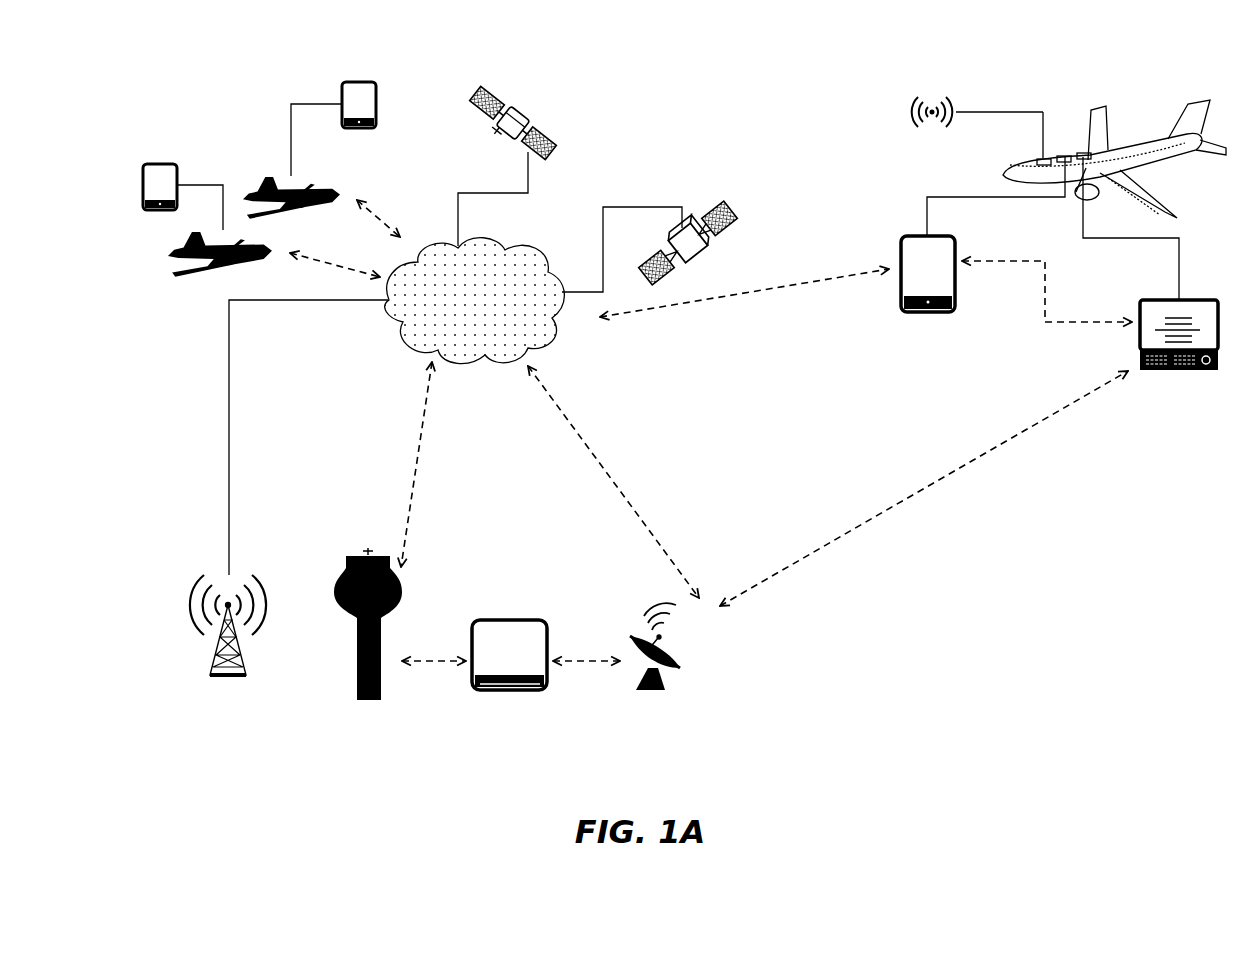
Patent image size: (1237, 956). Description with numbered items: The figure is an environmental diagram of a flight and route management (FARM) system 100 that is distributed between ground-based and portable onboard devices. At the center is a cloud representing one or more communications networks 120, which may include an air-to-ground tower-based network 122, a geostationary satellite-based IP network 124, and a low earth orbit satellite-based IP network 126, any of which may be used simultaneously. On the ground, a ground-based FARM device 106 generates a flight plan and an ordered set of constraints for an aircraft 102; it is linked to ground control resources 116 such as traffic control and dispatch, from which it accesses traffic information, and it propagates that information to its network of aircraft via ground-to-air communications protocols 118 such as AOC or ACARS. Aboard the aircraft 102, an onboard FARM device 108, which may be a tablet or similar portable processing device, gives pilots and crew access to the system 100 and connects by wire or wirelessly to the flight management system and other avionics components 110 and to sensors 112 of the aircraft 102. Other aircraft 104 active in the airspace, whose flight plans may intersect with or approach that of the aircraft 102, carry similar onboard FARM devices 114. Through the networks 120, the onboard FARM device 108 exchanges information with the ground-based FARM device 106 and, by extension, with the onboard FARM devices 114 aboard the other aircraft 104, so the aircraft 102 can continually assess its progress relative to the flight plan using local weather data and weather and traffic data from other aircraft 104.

The flight and route management (FARM) system 100 is at (184, 80).
The aircraft 102 is at (1112, 118).
The other aircraft 104 is at (330, 186).
The ground-based FARM device 106 is at (492, 620).
The onboard FARM device 108 is at (908, 316).
The flight management system and other avionics components 110 is at (1178, 372).
The sensors 112 is at (906, 118).
The onboard FARM devices of other aircraft 114 is at (360, 82).
The ground control resources 116 is at (340, 584).
The ground-to-air communications protocols 118 is at (686, 653).
The communications networks 120 is at (429, 339).
The air-to-ground tower-based network 122 is at (184, 588).
The geostationary satellite-based IP network 124 is at (540, 107).
The low earth orbit satellite-based IP network 126 is at (706, 212).